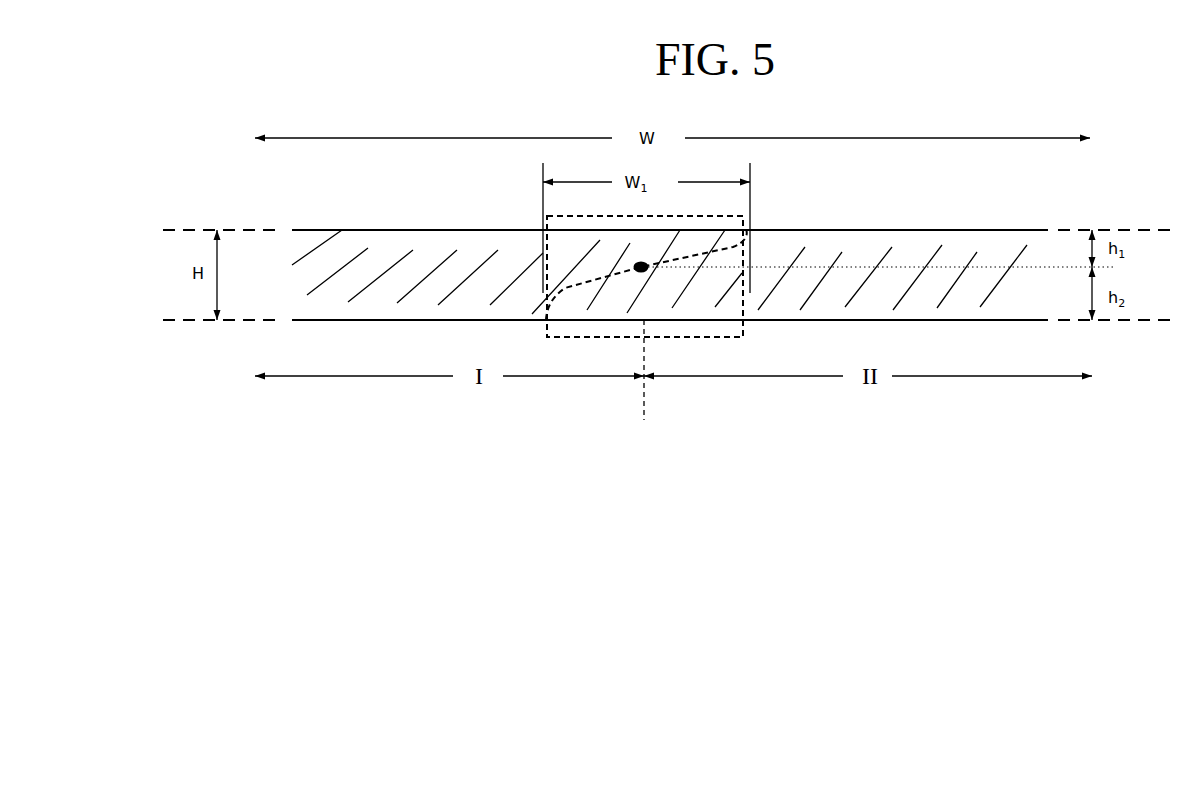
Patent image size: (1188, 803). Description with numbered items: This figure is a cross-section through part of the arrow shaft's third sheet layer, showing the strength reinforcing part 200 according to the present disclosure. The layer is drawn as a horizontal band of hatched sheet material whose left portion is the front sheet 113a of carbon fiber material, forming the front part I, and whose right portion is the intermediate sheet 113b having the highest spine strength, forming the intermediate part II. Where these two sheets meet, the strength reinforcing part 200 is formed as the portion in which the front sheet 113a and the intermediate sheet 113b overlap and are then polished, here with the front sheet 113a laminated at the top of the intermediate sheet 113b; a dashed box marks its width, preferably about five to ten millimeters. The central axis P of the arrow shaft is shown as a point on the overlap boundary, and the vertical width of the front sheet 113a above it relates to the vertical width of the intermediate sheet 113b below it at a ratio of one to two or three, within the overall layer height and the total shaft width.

The front sheet 113a is at (387, 321).
The intermediate sheet 113b is at (992, 321).
The strength reinforcing part 200 is at (588, 338).
The central axis P is at (645, 273).